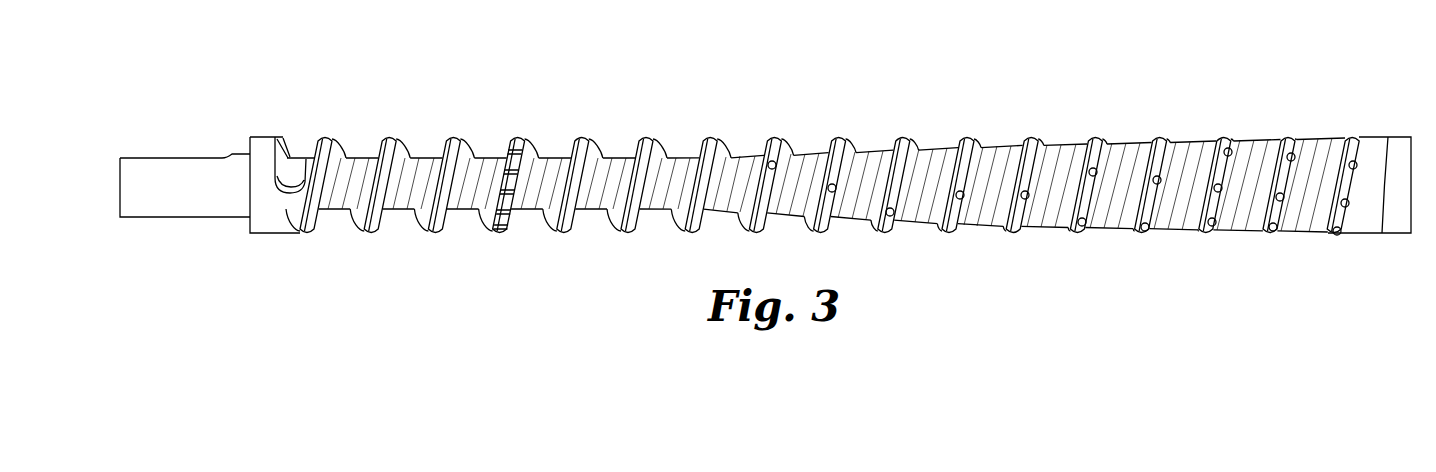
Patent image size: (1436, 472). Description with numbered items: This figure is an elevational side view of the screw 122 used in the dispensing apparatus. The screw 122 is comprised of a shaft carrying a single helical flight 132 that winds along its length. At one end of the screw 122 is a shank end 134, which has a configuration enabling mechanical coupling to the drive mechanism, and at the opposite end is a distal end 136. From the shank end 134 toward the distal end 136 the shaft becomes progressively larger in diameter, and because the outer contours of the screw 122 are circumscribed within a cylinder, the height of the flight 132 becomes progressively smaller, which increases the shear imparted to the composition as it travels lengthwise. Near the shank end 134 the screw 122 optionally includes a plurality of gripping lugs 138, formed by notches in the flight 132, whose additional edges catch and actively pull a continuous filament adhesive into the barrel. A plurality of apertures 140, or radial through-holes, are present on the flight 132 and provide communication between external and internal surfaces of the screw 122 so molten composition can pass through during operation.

The screw 122 is at (1233, 88).
The helical flight 132 is at (778, 140).
The shank end 134 is at (178, 170).
The distal end 136 is at (1397, 143).
The gripping lugs 138 is at (497, 197).
The apertures 140 is at (890, 208).